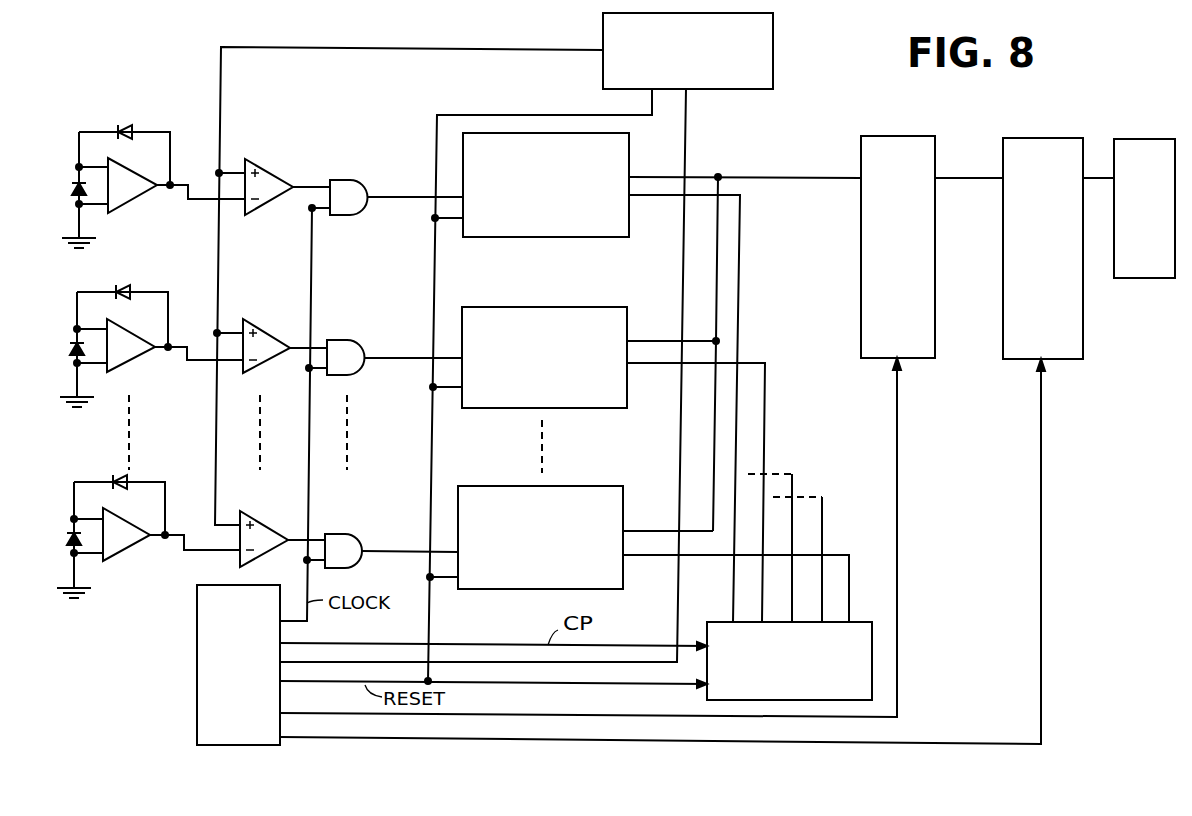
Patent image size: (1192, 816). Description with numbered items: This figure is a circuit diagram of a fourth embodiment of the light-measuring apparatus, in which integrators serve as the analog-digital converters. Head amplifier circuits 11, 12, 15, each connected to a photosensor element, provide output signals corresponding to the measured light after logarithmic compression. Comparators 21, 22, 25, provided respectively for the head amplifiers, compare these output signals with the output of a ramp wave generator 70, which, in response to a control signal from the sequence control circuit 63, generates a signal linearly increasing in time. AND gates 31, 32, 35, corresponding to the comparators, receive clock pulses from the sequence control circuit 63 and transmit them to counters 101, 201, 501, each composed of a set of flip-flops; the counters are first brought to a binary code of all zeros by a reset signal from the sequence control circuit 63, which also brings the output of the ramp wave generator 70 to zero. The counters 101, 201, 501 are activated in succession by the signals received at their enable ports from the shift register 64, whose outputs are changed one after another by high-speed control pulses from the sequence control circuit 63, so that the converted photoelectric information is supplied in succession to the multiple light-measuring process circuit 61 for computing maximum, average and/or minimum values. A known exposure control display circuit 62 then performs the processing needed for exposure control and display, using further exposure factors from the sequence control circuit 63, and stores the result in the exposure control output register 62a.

The head amplifier circuit 11 is at (135, 197).
The head amplifier circuit 12 is at (133, 358).
The head amplifier circuit 15 is at (125, 548).
The comparator 21 is at (265, 165).
The comparator 22 is at (268, 328).
The comparator 25 is at (268, 523).
The AND gate 31 is at (340, 180).
The AND gate 32 is at (347, 340).
The AND gate 35 is at (350, 534).
The counter 101 is at (532, 237).
The counter 201 is at (567, 307).
The counter 501 is at (580, 484).
The ramp wave generator 70 is at (743, 90).
The multiple light-measuring process circuit 61 is at (888, 135).
The exposure control display circuit 62 is at (1040, 138).
The exposure control output register 62a is at (1150, 139).
The sequence control circuit 63 is at (197, 631).
The shift register 64 is at (865, 621).